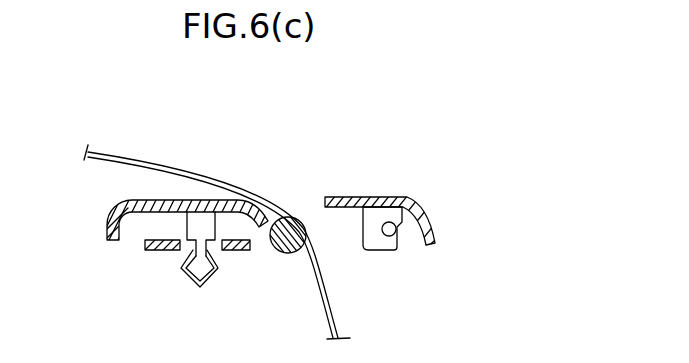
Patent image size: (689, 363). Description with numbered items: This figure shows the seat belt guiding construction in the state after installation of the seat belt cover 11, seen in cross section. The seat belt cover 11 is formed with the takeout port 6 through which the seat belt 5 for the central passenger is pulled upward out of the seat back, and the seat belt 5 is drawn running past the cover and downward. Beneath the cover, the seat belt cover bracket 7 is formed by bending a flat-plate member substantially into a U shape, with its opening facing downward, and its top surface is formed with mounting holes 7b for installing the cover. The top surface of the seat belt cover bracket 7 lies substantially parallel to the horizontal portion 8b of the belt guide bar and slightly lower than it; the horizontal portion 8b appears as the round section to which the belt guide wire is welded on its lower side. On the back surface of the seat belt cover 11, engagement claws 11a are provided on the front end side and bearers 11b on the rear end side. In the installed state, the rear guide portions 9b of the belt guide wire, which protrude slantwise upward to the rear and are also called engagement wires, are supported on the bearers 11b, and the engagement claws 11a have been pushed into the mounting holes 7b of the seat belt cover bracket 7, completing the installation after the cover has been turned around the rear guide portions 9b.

The seat belt 5 is at (338, 320).
The takeout port 6 is at (288, 163).
The seat belt cover bracket 7 is at (153, 252).
The mounting holes 7b is at (183, 253).
The horizontal portion 8b is at (282, 257).
The rear guide portions 9b is at (397, 231).
The seat belt cover 11 is at (345, 197).
The engagement claws 11a is at (216, 276).
The bearers 11b is at (368, 250).